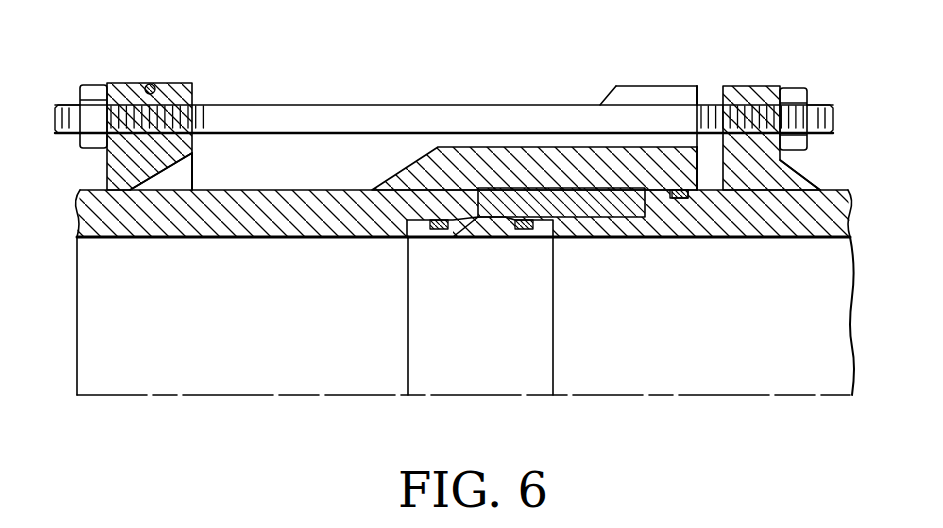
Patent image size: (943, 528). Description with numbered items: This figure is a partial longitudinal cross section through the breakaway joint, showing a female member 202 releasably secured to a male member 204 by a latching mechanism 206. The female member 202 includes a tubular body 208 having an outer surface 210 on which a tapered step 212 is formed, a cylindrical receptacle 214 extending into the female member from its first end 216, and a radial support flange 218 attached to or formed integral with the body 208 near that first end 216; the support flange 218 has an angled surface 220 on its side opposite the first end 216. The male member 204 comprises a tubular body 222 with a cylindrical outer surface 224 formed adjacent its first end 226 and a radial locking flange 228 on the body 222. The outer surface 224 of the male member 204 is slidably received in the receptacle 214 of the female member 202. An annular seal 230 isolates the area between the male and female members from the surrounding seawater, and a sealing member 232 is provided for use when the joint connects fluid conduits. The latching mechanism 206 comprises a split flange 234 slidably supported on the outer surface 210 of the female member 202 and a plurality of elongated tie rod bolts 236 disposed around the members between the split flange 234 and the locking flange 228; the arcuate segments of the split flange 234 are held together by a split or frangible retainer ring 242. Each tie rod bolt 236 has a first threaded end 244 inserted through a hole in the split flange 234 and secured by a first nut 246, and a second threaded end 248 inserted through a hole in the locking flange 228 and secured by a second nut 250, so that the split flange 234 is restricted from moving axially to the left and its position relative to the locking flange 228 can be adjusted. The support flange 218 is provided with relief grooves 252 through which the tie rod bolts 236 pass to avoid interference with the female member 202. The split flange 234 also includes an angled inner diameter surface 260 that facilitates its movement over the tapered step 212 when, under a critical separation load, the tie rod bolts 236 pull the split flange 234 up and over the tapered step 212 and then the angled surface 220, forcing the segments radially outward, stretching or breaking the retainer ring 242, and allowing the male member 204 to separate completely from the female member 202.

The female member 202 is at (94, 182).
The male member 204 is at (850, 171).
The latching mechanism 206 is at (444, 58).
The tubular body 208 is at (130, 249).
The outer surface 210 is at (213, 188).
The tapered step 212 is at (398, 172).
The cylindrical receptacle 214 is at (645, 195).
The first end 216 is at (713, 182).
The radial support flange 218 is at (633, 87).
The angled surface 220 is at (602, 102).
The tubular body 222 is at (822, 254).
The cylindrical outer surface 224 is at (562, 188).
The first end 226 is at (475, 205).
The radial locking flange 228 is at (767, 87).
The annular seal 230 is at (678, 200).
The sealing member 232 is at (497, 251).
The split flange 234 is at (177, 85).
The tie rod bolts 236 is at (320, 103).
The retainer ring 242 is at (153, 82).
The first threaded end 244 is at (193, 108).
The first nut 246 is at (98, 85).
The second threaded end 248 is at (823, 103).
The second nut 250 is at (795, 88).
The relief grooves 252 is at (677, 93).
The angled inner diameter surface 260 is at (173, 180).